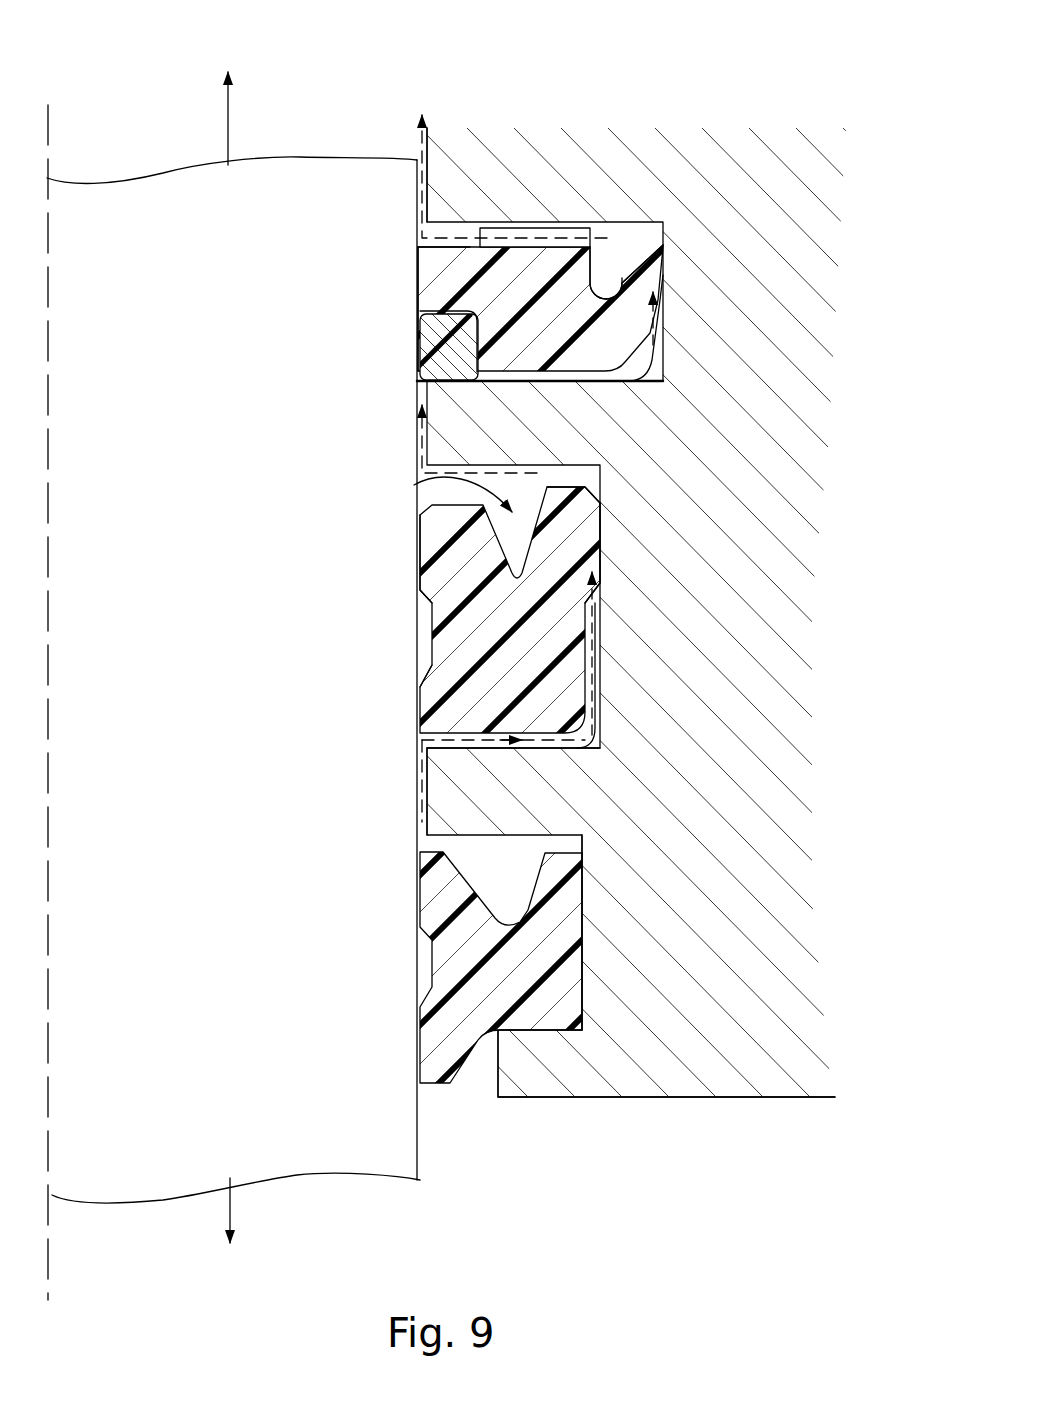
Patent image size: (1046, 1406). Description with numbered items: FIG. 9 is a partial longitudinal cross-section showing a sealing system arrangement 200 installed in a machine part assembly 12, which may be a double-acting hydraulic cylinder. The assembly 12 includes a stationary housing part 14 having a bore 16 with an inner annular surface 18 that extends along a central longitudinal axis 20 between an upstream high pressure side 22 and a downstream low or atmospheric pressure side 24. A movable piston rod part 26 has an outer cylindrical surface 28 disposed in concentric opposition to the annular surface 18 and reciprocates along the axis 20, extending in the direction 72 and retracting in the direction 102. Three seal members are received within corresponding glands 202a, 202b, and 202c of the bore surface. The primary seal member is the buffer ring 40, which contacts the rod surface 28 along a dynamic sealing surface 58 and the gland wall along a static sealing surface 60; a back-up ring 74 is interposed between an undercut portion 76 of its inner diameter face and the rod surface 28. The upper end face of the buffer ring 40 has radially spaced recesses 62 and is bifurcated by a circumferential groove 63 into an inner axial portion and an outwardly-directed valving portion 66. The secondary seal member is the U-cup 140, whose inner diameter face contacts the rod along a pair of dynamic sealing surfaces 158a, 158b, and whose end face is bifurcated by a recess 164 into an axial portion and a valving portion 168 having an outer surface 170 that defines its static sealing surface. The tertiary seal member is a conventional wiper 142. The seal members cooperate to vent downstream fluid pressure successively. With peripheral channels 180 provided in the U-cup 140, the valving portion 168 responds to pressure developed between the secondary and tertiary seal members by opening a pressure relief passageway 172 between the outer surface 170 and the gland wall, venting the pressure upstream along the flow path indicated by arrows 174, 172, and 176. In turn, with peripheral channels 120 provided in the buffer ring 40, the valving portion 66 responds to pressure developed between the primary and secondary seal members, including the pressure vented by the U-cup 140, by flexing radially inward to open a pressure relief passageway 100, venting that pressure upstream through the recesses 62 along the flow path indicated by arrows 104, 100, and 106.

The machine part assembly 12 is at (397, 67).
The stationary housing part 14 is at (827, 157).
The bore 16 is at (155, 1239).
The inner annular surface 18 is at (498, 1083).
The central longitudinal axis 20 is at (52, 1268).
The upstream high pressure side 22 is at (187, 109).
The downstream low or atmospheric fluid pressure side 24 is at (182, 1277).
The movable piston rod part 26 is at (83, 181).
The outer cylindrical surface 28 is at (420, 1176).
The primary seal member 40 is at (425, 246).
The dynamic sealing surface 58 is at (417, 283).
The static sealing surface 60 is at (663, 265).
The recess 62 is at (519, 221).
The groove 63 is at (615, 247).
The valving portion 66 is at (647, 222).
The extension stroke direction 72 is at (232, 1215).
The back-up ring 74 is at (418, 360).
The undercut portion 76 is at (418, 318).
The pressure relief passageway 100 is at (663, 318).
The retraction direction 102 is at (230, 140).
The fluid flow path arrow 104 is at (545, 382).
The fluid flow path arrow 106 is at (417, 193).
The peripheral channels 120 is at (629, 396).
The U-cup 140 is at (417, 508).
The wiper 142 is at (420, 888).
The dynamic sealing surface 158a is at (417, 557).
The dynamic sealing surface 158b is at (417, 693).
The recess 164 is at (417, 483).
The valving portion 168 is at (600, 465).
The outer surface 170 is at (600, 537).
The pressure relief passageway 172 is at (600, 663).
The fluid flow path arrow 174 is at (420, 795).
The fluid flow path arrow 176 is at (418, 427).
The peripheral channels 180 is at (612, 695).
The sealing system arrangement 200 is at (658, 52).
The gland 202a is at (665, 372).
The gland 202b is at (600, 737).
The gland 202c is at (583, 993).